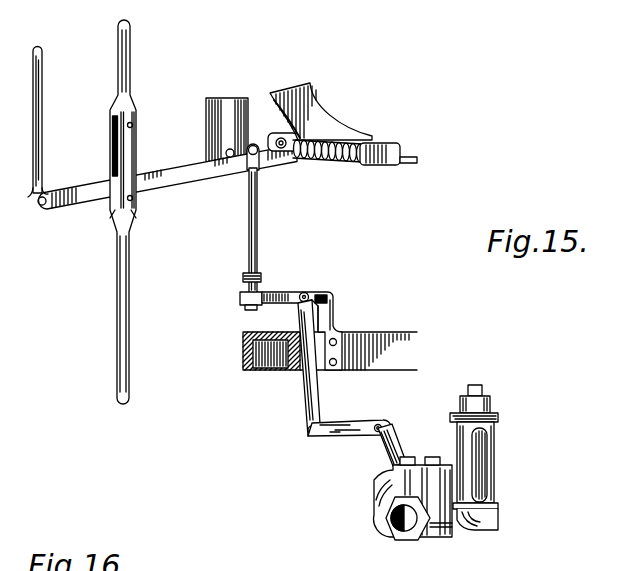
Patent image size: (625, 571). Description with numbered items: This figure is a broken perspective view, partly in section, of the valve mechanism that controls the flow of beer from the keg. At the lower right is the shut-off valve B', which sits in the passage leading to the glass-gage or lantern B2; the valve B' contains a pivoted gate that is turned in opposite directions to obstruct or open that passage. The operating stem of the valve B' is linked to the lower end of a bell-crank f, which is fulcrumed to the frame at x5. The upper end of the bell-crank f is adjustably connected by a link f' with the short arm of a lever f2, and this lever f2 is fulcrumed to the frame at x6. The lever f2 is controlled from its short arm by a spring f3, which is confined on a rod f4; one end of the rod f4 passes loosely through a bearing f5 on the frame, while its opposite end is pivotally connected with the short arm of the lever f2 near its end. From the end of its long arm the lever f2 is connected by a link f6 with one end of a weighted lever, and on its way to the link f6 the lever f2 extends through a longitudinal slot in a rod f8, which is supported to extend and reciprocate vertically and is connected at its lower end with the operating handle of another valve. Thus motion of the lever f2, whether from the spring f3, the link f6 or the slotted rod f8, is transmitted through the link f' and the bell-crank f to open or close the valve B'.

The bell-crank f is at (324, 369).
The link f' is at (268, 227).
The lever f2 is at (170, 173).
The spring f3 is at (348, 160).
The rod f4 is at (409, 165).
The bearing f5 is at (357, 111).
The link f6 is at (52, 131).
The rod f8 is at (116, 311).
The fulcrum x5 is at (308, 292).
The fulcrum x6 is at (228, 158).
The shut-off valve B' is at (413, 514).
The glass-gage B2 is at (496, 467).